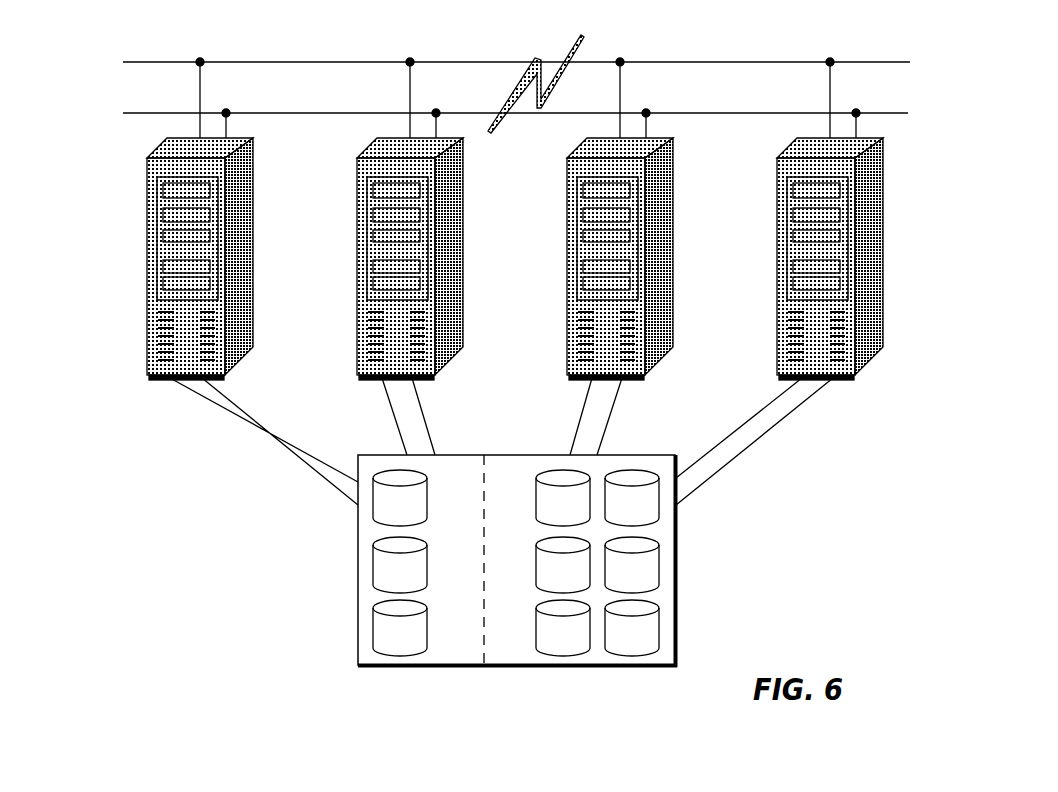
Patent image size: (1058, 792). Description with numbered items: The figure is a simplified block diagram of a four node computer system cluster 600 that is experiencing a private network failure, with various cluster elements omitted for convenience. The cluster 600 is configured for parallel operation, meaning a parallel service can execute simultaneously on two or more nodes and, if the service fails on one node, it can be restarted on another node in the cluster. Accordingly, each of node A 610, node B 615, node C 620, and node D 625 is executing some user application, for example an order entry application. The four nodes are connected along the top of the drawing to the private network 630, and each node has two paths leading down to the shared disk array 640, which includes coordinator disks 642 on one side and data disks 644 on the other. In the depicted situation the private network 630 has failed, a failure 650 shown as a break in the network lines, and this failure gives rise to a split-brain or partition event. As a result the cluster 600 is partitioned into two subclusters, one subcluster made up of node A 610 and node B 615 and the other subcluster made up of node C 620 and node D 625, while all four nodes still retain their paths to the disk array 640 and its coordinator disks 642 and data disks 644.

The cluster 600 is at (246, 591).
The node A 610 is at (147, 247).
The node B 615 is at (357, 247).
The node C 620 is at (567, 247).
The node D 625 is at (777, 247).
The private network 630 is at (900, 113).
The disk array 640 is at (557, 578).
The coordinator disks 642 is at (467, 656).
The data disks 644 is at (525, 656).
The private network failure 650 is at (514, 90).